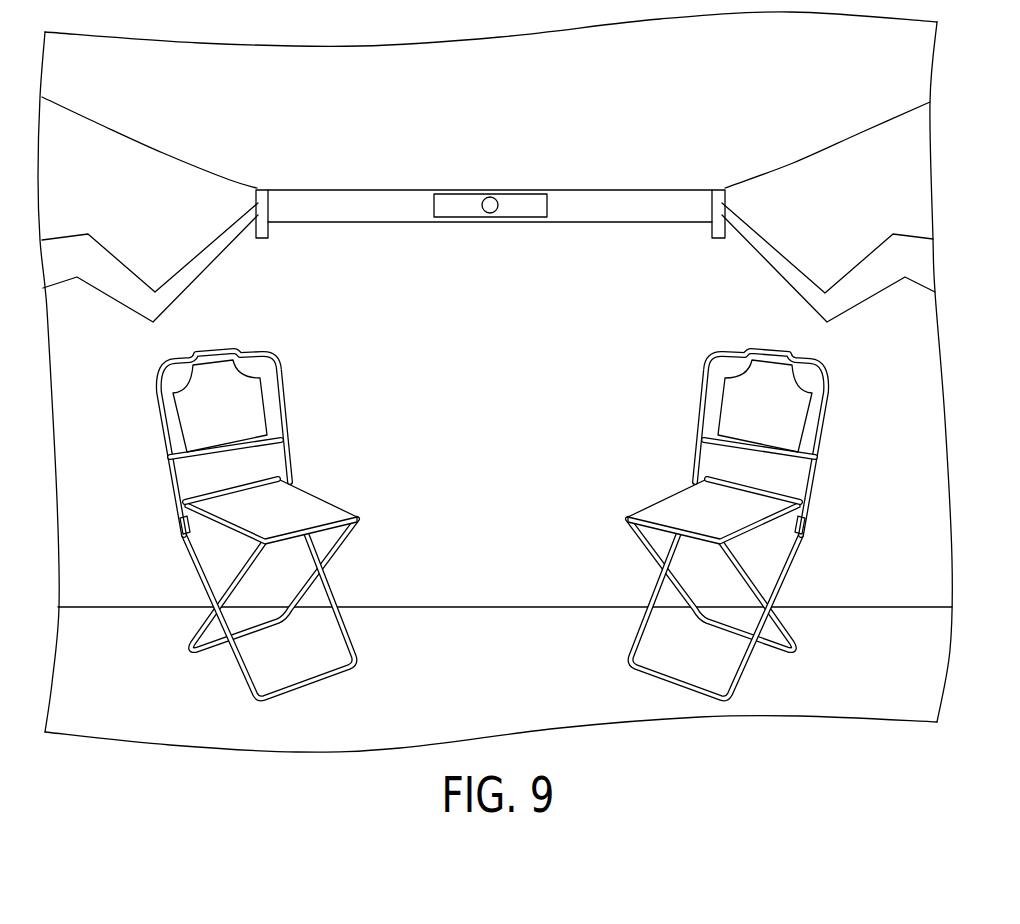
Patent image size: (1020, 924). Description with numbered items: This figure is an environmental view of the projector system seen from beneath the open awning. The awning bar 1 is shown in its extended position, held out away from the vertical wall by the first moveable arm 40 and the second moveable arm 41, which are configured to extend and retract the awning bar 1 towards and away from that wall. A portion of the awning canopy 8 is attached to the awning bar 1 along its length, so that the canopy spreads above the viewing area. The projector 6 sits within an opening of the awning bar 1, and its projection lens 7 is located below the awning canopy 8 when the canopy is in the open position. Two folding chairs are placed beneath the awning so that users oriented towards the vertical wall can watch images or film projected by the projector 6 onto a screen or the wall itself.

The awning bar 1 is at (295, 215).
The projector 6 is at (459, 208).
The projection lens 7 is at (493, 213).
The awning canopy 8 is at (831, 148).
The first moveable arm 40 is at (889, 275).
The second moveable arm 41 is at (93, 274).